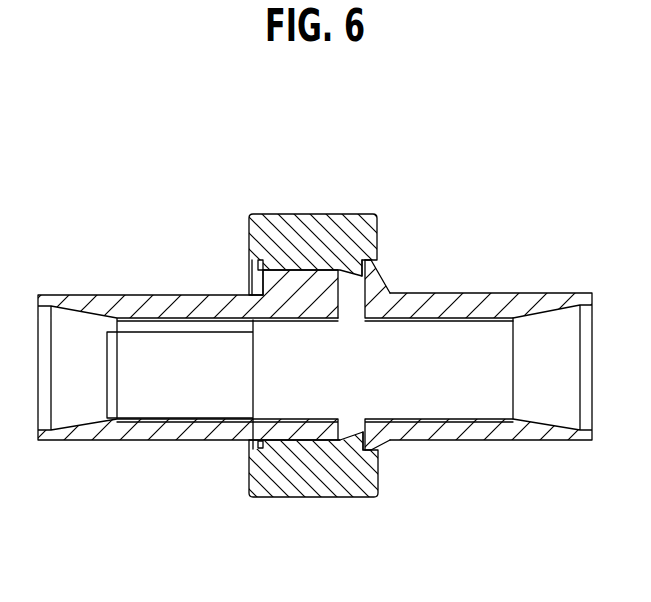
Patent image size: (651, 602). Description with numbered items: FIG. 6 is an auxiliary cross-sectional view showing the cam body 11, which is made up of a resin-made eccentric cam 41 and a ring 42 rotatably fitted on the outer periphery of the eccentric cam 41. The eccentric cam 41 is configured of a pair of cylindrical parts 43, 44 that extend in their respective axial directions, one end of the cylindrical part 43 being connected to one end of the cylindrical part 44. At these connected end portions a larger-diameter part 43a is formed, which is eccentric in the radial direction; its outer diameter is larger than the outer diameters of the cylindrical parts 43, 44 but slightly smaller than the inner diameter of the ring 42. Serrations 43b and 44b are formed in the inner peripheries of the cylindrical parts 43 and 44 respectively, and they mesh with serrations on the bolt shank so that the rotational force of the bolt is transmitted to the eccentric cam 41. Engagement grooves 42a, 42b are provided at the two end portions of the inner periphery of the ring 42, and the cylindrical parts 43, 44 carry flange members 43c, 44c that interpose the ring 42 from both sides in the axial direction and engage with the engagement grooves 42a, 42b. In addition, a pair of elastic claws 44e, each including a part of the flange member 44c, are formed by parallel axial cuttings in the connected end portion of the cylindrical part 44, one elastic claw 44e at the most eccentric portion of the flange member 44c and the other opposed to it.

The cam body 11 is at (371, 190).
The eccentric cam 41 is at (506, 283).
The ring 42 is at (276, 213).
The engagement groove 42a is at (257, 465).
The engagement groove 42b is at (380, 443).
The cylindrical part 43 is at (78, 300).
The larger-diameter part 43a is at (282, 275).
The serrations 43b is at (155, 417).
The flange member 43c is at (250, 270).
The cylindrical part 44 is at (555, 298).
The serrations 44b is at (473, 417).
The flange member 44c is at (380, 270).
The elastic claw 44e is at (388, 305).